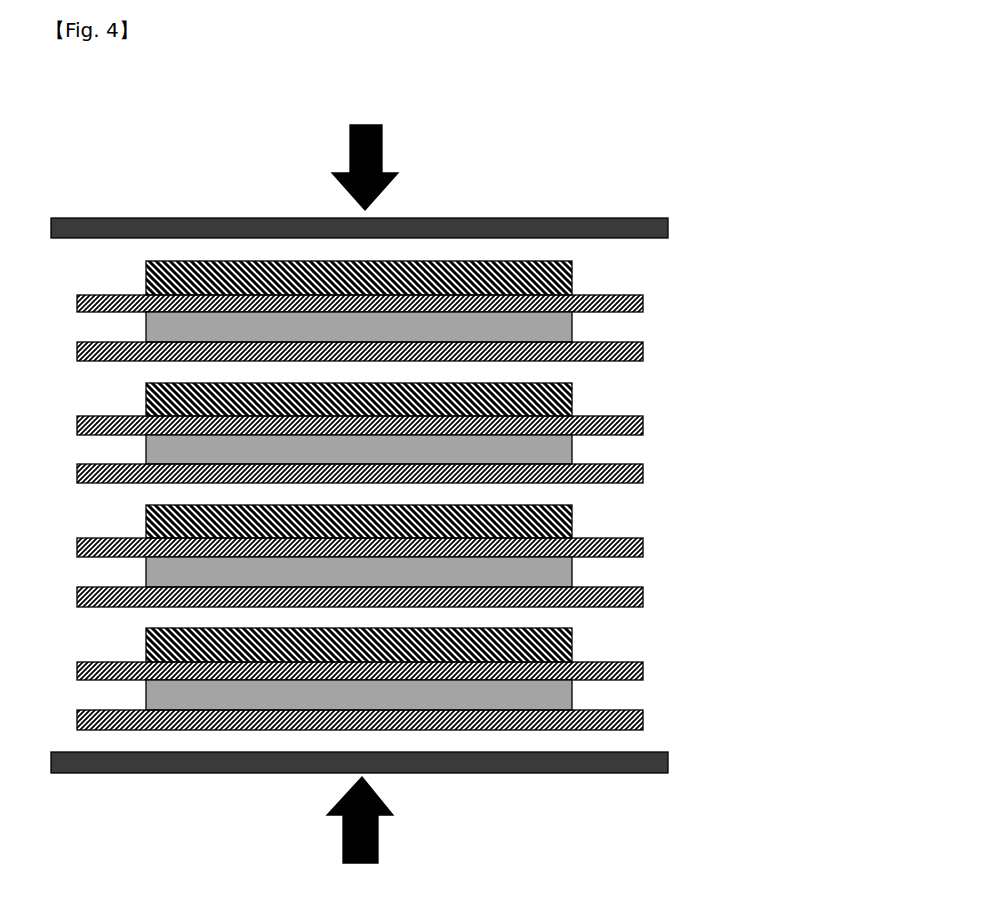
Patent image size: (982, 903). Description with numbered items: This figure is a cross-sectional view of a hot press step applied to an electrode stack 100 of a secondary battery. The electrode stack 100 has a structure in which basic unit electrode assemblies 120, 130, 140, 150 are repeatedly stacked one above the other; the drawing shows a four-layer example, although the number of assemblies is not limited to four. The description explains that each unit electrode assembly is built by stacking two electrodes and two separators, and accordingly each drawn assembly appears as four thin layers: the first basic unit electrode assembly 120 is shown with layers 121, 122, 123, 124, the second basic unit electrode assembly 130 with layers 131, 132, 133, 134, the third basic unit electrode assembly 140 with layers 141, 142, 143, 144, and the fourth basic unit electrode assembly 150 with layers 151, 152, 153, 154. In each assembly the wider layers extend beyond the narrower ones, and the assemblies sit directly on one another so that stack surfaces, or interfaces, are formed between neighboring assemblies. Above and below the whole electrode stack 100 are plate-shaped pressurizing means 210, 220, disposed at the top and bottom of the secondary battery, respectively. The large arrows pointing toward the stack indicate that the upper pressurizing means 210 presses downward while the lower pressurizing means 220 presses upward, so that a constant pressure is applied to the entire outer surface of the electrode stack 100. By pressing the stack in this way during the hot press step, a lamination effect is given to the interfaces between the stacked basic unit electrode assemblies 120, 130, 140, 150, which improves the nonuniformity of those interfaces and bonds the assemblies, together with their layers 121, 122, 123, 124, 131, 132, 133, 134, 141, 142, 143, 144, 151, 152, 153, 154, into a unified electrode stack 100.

The electrode stack 100 is at (477, 497).
The basic unit electrode assembly 120 is at (448, 313).
The first electrode 121 is at (573, 269).
The first separator 122 is at (644, 298).
The second electrode 123 is at (573, 320).
The second separator 124 is at (644, 350).
The basic unit electrode assembly 130 is at (438, 435).
The first electrode 131 is at (573, 391).
The first separator 132 is at (644, 419).
The second electrode 133 is at (573, 443).
The second separator 134 is at (644, 472).
The basic unit electrode assembly 140 is at (438, 559).
The first electrode 141 is at (573, 513).
The first separator 142 is at (644, 541).
The second electrode 143 is at (573, 565).
The second separator 144 is at (644, 595).
The basic unit electrode assembly 150 is at (448, 681).
The first electrode 151 is at (573, 636).
The first separator 152 is at (644, 665).
The second electrode 153 is at (573, 688).
The second separator 154 is at (644, 718).
The pressurizing means 210 is at (669, 227).
The pressurizing means 220 is at (669, 760).